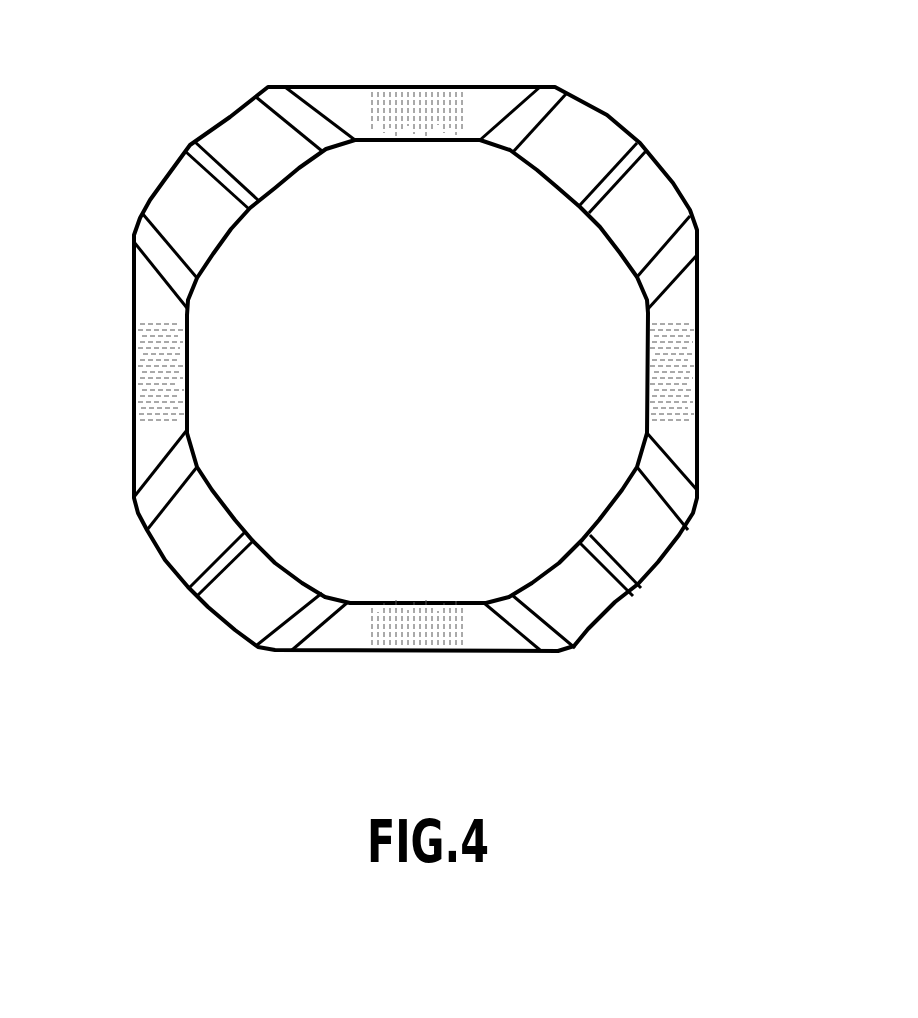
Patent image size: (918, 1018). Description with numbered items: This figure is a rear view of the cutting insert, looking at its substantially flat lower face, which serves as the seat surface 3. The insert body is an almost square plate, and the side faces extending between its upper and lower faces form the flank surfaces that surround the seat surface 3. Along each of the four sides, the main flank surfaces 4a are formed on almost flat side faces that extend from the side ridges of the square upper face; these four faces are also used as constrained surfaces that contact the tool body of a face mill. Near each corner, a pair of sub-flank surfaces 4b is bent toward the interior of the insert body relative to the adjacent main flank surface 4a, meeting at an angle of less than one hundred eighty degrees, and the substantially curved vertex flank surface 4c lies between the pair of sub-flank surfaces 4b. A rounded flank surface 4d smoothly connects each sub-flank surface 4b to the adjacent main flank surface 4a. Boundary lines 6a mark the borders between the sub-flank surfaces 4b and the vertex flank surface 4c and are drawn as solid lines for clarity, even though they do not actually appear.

The seat surface 3 is at (443, 345).
The main flank surfaces 4a is at (142, 342).
The sub-flank surfaces 4b is at (232, 128).
The vertex flank surface 4c is at (191, 149).
The rounded flank surface 4d is at (276, 96).
The boundary lines 6a is at (236, 174).